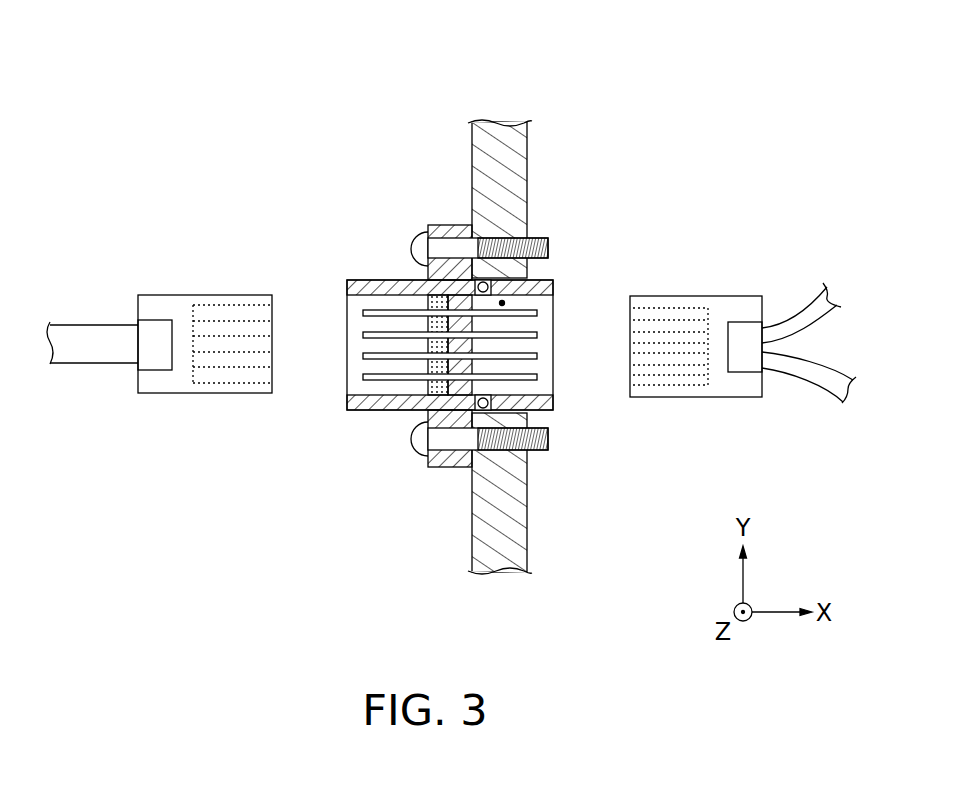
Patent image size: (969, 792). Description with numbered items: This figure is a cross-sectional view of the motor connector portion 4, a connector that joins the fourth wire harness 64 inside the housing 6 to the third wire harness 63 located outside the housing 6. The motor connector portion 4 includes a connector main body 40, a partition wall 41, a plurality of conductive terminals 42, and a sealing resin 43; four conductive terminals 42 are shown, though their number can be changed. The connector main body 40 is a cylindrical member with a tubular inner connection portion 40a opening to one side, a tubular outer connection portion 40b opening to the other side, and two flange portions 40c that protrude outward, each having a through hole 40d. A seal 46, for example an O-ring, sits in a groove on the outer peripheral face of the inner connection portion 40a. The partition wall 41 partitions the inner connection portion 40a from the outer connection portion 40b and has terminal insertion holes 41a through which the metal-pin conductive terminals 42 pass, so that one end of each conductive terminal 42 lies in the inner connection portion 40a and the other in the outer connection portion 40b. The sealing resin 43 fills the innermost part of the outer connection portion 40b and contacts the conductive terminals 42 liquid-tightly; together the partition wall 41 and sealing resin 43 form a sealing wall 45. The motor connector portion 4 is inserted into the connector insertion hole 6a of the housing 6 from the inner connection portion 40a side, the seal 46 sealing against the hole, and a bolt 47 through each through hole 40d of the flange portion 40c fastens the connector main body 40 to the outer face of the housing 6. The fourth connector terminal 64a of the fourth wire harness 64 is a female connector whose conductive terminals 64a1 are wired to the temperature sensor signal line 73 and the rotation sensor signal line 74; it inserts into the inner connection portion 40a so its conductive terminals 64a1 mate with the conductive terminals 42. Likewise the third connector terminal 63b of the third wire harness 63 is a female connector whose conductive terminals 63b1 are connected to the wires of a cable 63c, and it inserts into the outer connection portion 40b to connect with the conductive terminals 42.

The motor connector portion 4 is at (450, 291).
The housing 6 is at (525, 152).
The connector insertion hole 6a is at (505, 290).
The connector main body 40 is at (450, 349).
The inner connection portion 40a is at (555, 398).
The outer connection portion 40b is at (345, 283).
The flange portion 40c is at (455, 228).
The through hole 40d is at (452, 248).
The partition wall 41 is at (467, 323).
The terminal insertion hole 41a is at (470, 358).
The conductive terminal 42 is at (363, 357).
The sealing resin 43 is at (400, 327).
The sealing wall 45 is at (504, 303).
The seal 46 is at (440, 103).
The bolt 47 is at (420, 245).
The third wire harness 63 is at (159, 325).
The third connector terminal 63b is at (227, 353).
The conductive terminal 63b1 is at (230, 362).
The cable 63c is at (88, 330).
The fourth wire harness 64 is at (766, 329).
The fourth connector terminal 64a is at (685, 355).
The conductive terminal 64a1 is at (678, 355).
The temperature sensor signal line 73 is at (810, 322).
The rotation sensor signal line 74 is at (826, 380).